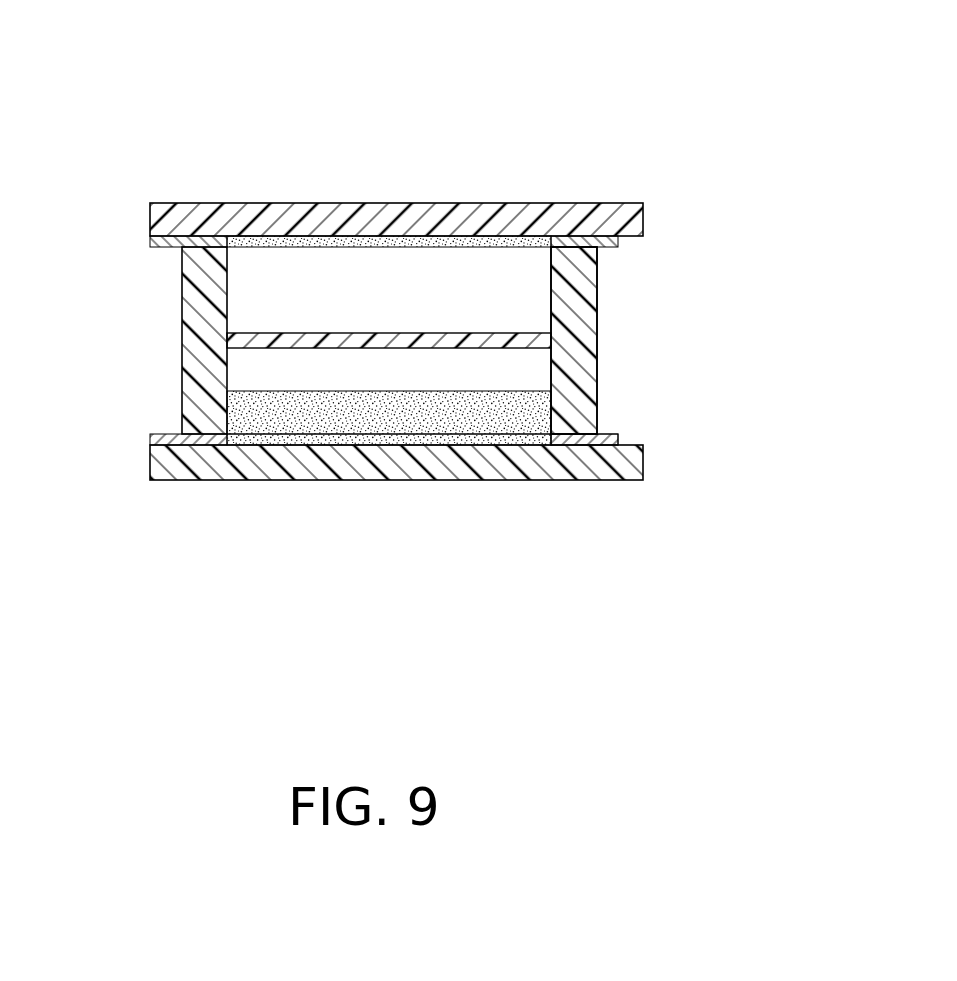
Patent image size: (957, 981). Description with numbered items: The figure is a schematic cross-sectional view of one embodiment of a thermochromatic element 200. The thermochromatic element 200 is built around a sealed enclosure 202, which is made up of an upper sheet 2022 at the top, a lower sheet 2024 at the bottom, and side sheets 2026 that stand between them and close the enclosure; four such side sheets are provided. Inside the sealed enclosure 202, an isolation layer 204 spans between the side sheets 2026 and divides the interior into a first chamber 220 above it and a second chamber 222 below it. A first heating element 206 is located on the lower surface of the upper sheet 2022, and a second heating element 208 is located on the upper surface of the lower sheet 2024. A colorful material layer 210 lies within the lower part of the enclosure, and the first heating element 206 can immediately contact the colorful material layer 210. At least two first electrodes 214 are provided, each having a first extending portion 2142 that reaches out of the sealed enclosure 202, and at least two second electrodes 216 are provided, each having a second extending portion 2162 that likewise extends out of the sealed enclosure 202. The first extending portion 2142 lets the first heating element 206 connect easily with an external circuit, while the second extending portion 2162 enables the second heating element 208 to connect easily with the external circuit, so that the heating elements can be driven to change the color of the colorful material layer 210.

The thermochromatic element 200 is at (413, 75).
The sealed enclosure 202 is at (758, 193).
The upper sheet 2022 is at (637, 213).
The lower sheet 2024 is at (638, 449).
The side sheet 2026 is at (583, 363).
The isolation layer 204 is at (230, 337).
The first heating element 206 is at (423, 240).
The second heating element 208 is at (460, 440).
The colorful material layer 210 is at (293, 415).
The first electrode 214 is at (225, 256).
The first extending portion 2142 is at (153, 240).
The second electrode 216 is at (575, 440).
The second extending portion 2162 is at (153, 437).
The first chamber 220 is at (247, 255).
The second chamber 222 is at (237, 377).